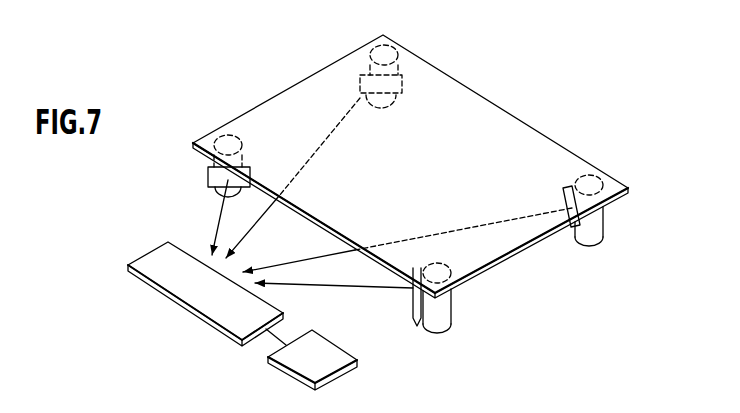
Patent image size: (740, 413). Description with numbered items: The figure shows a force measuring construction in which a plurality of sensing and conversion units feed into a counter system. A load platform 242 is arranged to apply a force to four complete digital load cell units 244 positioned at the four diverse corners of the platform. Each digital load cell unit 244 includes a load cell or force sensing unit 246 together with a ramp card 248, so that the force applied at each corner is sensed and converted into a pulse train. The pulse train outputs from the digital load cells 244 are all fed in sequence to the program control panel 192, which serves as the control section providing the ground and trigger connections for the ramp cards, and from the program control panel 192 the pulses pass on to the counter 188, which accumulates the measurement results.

The load platform 242 is at (498, 111).
The digital load cell unit 244 is at (418, 61).
The force sensing unit 246 is at (199, 138).
The ramp card 248 is at (208, 168).
The program control panel 192 is at (202, 300).
The counter system 188 is at (356, 364).